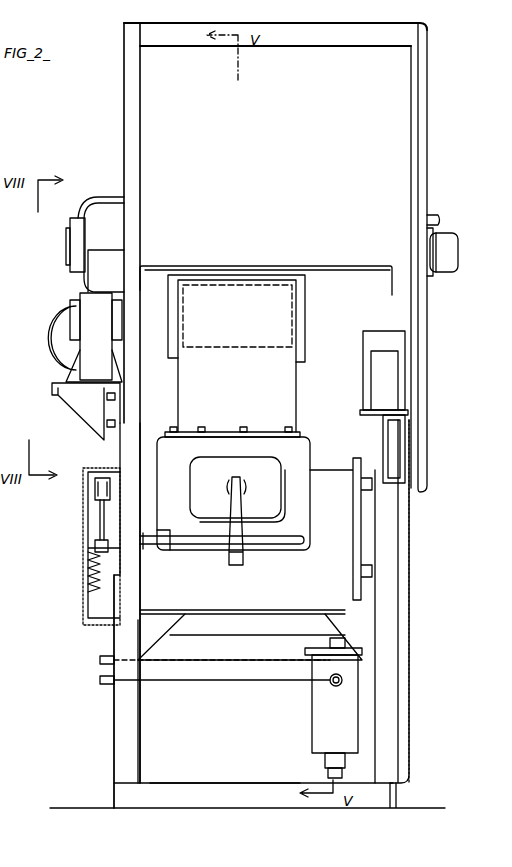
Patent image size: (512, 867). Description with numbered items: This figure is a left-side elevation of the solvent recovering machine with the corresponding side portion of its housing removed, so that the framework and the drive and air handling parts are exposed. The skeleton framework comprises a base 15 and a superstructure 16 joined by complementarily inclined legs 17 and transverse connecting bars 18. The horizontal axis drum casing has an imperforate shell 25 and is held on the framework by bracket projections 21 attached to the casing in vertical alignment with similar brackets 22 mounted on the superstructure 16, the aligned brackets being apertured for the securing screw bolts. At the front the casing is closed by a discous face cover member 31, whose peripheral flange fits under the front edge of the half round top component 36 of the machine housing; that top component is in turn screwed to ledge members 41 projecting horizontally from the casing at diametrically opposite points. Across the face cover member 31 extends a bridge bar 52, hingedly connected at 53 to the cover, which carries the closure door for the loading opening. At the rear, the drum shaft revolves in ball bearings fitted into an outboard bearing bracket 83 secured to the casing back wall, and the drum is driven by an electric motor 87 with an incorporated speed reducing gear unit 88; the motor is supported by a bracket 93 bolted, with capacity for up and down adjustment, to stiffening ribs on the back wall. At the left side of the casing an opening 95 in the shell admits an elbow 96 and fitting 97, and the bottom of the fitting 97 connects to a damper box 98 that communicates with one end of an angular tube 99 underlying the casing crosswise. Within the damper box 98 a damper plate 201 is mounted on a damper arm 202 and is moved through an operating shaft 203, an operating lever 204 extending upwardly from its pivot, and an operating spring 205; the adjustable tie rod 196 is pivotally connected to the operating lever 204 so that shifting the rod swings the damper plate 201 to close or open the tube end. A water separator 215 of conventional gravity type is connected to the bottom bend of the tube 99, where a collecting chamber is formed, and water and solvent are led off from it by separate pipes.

The base 15 is at (225, 770).
The superstructure 16 is at (148, 692).
The legs 17 is at (392, 529).
The transverse connecting bars 18 is at (238, 621).
The bracket projections 21 is at (395, 369).
The brackets 22 is at (395, 437).
The imperforate shell 25 is at (195, 403).
The face cover member 31 is at (439, 98).
The half round top component 36 is at (318, 27).
The ledge members 41 is at (241, 269).
The bridge bar 52 is at (462, 252).
The hinge connection 53 is at (442, 222).
The outboard bearing bracket 83 is at (92, 243).
The electric motor 87 is at (63, 345).
The speed reducing gear unit 88 is at (88, 311).
The bracket 93 is at (72, 410).
The opening 95 is at (287, 343).
The elbow 96 is at (236, 318).
The fitting 97 is at (233, 433).
The damper box 98 is at (303, 450).
The angular tube 99 is at (242, 600).
The adjustable tie rod 196 is at (100, 470).
The damper plate 201 is at (270, 493).
The damper arm 202 is at (244, 556).
The operating shaft 203 is at (205, 547).
The operating lever 204 is at (103, 513).
The operating spring 205 is at (90, 562).
The water separator 215 is at (300, 706).